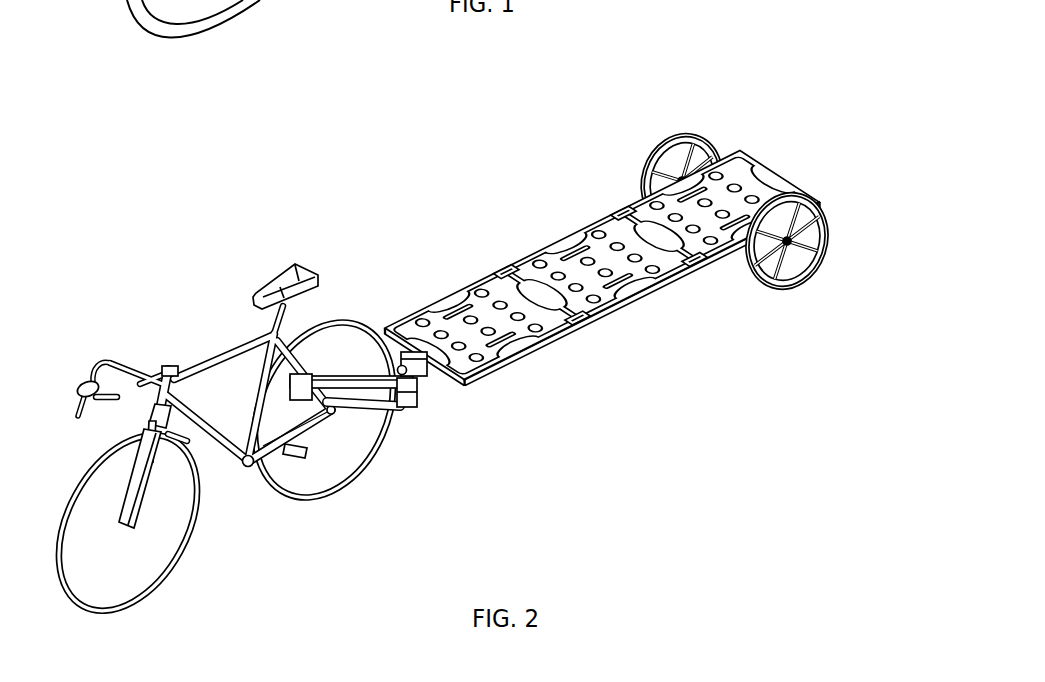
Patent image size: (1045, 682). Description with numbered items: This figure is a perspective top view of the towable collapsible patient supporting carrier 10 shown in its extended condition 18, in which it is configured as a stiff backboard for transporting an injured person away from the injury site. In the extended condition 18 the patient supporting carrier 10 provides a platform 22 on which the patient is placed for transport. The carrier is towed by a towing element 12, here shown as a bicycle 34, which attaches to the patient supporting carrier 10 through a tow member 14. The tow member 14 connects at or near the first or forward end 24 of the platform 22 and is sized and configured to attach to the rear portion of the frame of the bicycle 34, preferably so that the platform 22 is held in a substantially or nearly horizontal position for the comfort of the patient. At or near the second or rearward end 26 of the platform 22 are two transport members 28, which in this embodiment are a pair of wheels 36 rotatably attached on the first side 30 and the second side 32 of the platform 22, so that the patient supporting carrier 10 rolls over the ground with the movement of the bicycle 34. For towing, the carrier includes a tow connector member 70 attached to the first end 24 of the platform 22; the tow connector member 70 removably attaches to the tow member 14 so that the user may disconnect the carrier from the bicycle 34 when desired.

The patient supporting carrier 10 is at (667, 107).
The towing element 12 is at (198, 346).
The tow member 14 is at (363, 403).
The extended condition 18 is at (505, 226).
The platform 22 is at (600, 266).
The first or forward end 24 is at (385, 321).
The second or rearward end 26 is at (739, 156).
The transport member 28 is at (782, 288).
The first side 30 is at (533, 354).
The second side 32 is at (483, 324).
The bicycle 34 is at (226, 452).
The wheel 36 is at (823, 213).
The tow connector member 70 is at (429, 377).